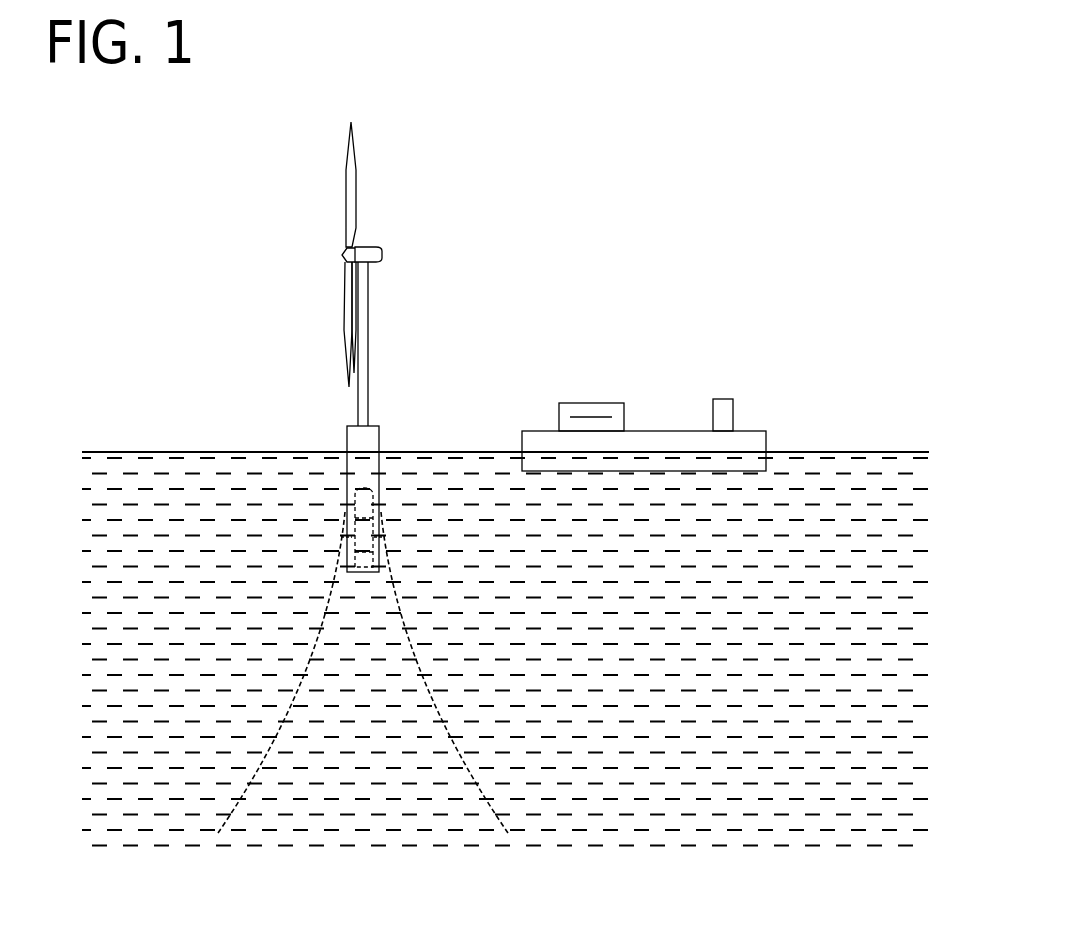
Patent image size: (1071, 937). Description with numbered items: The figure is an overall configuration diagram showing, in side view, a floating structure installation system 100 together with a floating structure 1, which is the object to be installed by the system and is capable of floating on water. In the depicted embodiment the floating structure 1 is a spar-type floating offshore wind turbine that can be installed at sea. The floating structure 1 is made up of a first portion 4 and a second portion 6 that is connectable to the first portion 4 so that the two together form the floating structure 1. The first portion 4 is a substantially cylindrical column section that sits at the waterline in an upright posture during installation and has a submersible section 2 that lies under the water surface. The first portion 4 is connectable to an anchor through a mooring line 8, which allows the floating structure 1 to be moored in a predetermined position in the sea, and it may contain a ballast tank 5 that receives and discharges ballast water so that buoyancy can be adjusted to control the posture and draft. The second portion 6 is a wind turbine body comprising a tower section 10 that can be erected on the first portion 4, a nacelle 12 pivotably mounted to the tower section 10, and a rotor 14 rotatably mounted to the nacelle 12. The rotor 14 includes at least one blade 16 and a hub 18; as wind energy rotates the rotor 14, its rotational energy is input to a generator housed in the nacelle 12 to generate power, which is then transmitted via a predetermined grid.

The floating structure 1 is at (412, 168).
The submersible section 2 is at (383, 518).
The first portion 4 is at (380, 425).
The ballast tank 5 is at (343, 538).
The second portion 6 is at (370, 247).
The mooring line 8 is at (303, 663).
The tower section 10 is at (369, 335).
The nacelle 12 is at (383, 255).
The rotor 14 is at (264, 177).
The blade 16 is at (346, 200).
The hub 18 is at (342, 255).
The floating structure installation system 100 is at (753, 378).